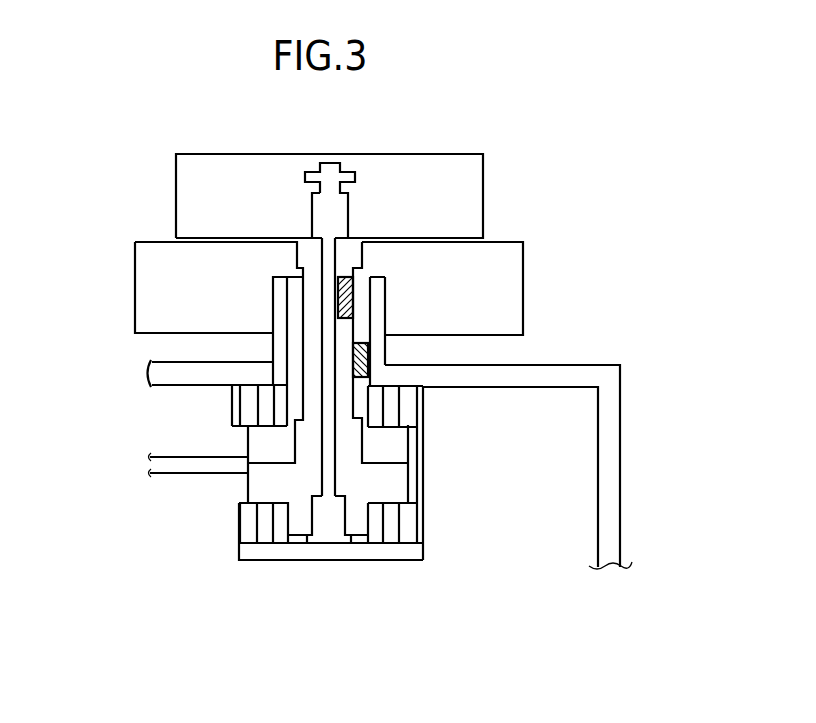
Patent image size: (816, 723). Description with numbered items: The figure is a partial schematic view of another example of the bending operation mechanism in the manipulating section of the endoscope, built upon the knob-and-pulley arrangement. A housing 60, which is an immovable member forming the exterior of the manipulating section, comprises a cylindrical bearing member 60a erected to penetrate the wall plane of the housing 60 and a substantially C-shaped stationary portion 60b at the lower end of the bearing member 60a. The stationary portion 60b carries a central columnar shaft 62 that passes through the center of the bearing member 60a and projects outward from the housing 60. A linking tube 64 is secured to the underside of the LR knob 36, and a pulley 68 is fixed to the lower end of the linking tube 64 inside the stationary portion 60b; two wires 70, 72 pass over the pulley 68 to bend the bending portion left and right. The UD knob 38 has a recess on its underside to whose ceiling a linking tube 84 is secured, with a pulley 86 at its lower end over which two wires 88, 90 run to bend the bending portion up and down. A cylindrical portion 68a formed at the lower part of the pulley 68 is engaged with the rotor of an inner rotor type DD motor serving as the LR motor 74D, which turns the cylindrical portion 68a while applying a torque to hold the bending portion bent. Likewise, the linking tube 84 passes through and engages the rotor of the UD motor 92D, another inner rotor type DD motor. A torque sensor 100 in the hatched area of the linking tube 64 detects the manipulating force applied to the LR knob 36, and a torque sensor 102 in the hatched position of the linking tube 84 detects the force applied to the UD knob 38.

The LR knob 36 is at (452, 154).
The UD knob 38 is at (512, 275).
The central columnar shaft 62 is at (332, 292).
The linking tube 84 is at (297, 302).
The cylindrical bearing member 60a is at (278, 317).
The linking tube 64 is at (312, 328).
The torque sensor 100 is at (345, 305).
The torque sensor 102 is at (362, 364).
The UD motor 92D is at (412, 408).
The pulley 86 is at (258, 445).
The pulley 68 is at (255, 483).
The cylindrical portion 68a is at (298, 522).
The LR motor 74D is at (412, 523).
The stationary portion 60b is at (390, 550).
The housing 60 is at (620, 503).
The wire 88 is at (146, 451).
The wire 90 is at (167, 457).
The wire 70 is at (183, 519).
The wire 72 is at (162, 477).